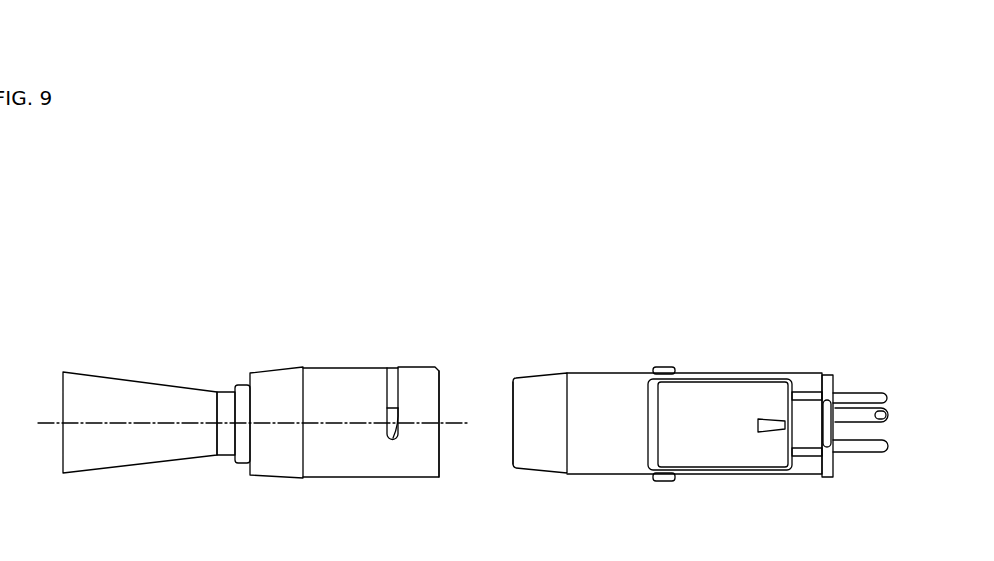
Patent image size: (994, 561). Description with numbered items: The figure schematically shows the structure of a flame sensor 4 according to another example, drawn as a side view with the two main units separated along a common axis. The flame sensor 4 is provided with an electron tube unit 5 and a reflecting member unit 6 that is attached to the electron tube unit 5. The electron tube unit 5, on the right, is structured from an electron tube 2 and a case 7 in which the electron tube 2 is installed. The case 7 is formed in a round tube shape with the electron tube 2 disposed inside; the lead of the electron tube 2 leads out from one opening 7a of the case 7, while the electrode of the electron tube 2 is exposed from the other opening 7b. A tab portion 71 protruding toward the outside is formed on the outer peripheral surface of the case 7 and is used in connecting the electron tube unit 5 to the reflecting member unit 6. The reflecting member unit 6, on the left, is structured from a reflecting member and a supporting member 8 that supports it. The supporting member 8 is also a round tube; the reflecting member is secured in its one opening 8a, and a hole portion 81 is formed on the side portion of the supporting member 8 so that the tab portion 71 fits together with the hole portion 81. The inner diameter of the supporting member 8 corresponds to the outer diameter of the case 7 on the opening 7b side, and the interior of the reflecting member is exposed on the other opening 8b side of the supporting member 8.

The flame sensor 4 is at (112, 209).
The reflecting member unit 6 is at (258, 307).
The electron tube unit 5 is at (762, 310).
The supporting member 8 is at (341, 478).
The opening of the supporting member 8a is at (235, 463).
The hole portion 81 is at (392, 369).
The other opening of the supporting member 8b is at (440, 466).
The case 7 is at (598, 373).
The other opening of the case 7b is at (513, 392).
The tab portion 71 is at (662, 367).
The opening of the case 7a is at (833, 378).
The electron tube 2 is at (737, 467).